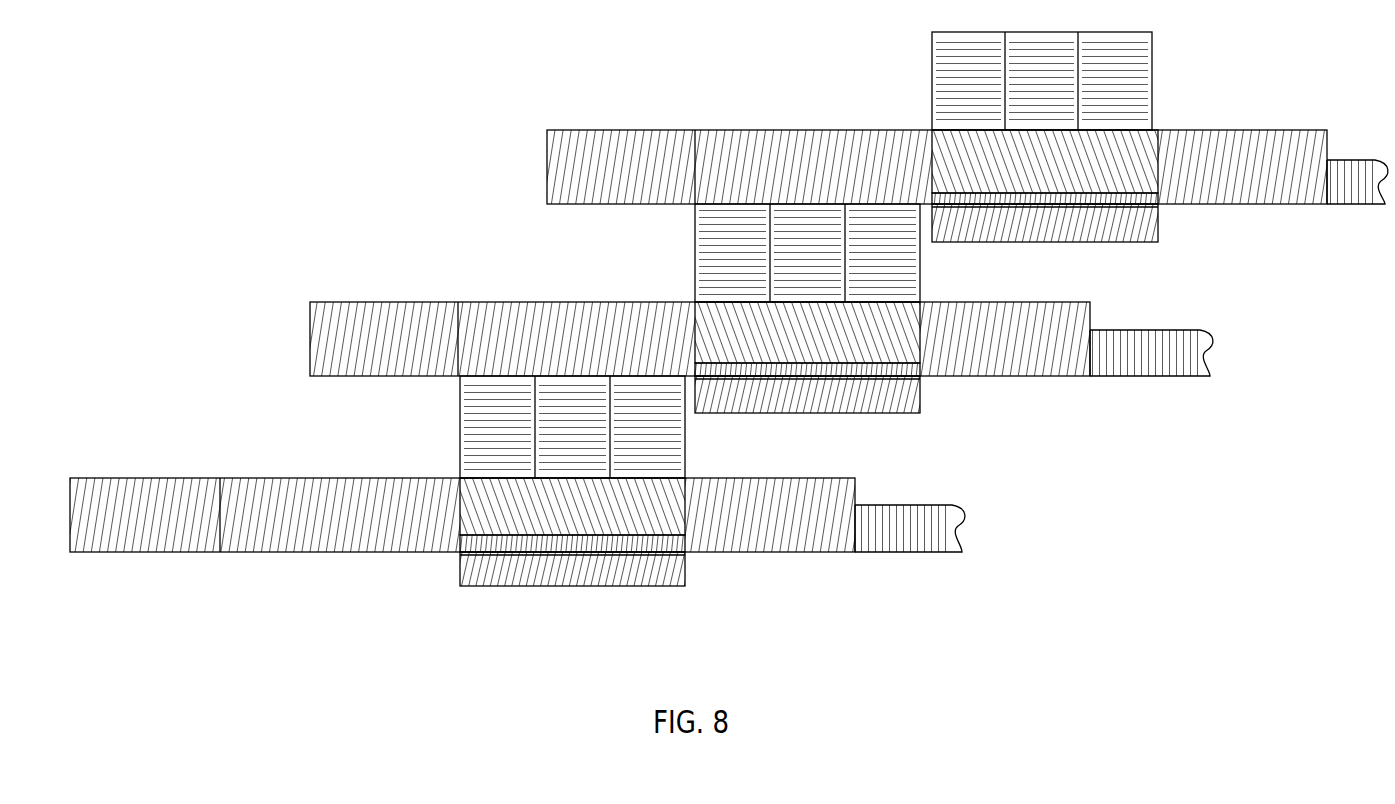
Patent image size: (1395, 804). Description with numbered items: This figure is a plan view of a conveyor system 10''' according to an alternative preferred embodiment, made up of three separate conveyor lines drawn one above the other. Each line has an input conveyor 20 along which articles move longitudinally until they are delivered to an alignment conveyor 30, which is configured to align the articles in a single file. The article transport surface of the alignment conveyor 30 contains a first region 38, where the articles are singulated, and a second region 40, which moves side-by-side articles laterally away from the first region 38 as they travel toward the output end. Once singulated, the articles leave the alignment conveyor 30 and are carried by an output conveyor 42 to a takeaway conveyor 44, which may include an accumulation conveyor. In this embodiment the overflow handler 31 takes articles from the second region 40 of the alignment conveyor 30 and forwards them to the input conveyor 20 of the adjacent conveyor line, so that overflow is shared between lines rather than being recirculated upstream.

The conveyor system 10''' is at (231, 124).
The input conveyor 20 is at (360, 478).
The alignment conveyor 30 is at (688, 580).
The overflow handler 31 is at (448, 421).
The first region 38 is at (570, 548).
The second region 40 is at (643, 505).
The output conveyor 42 is at (778, 553).
The takeaway conveyor 44 is at (900, 553).